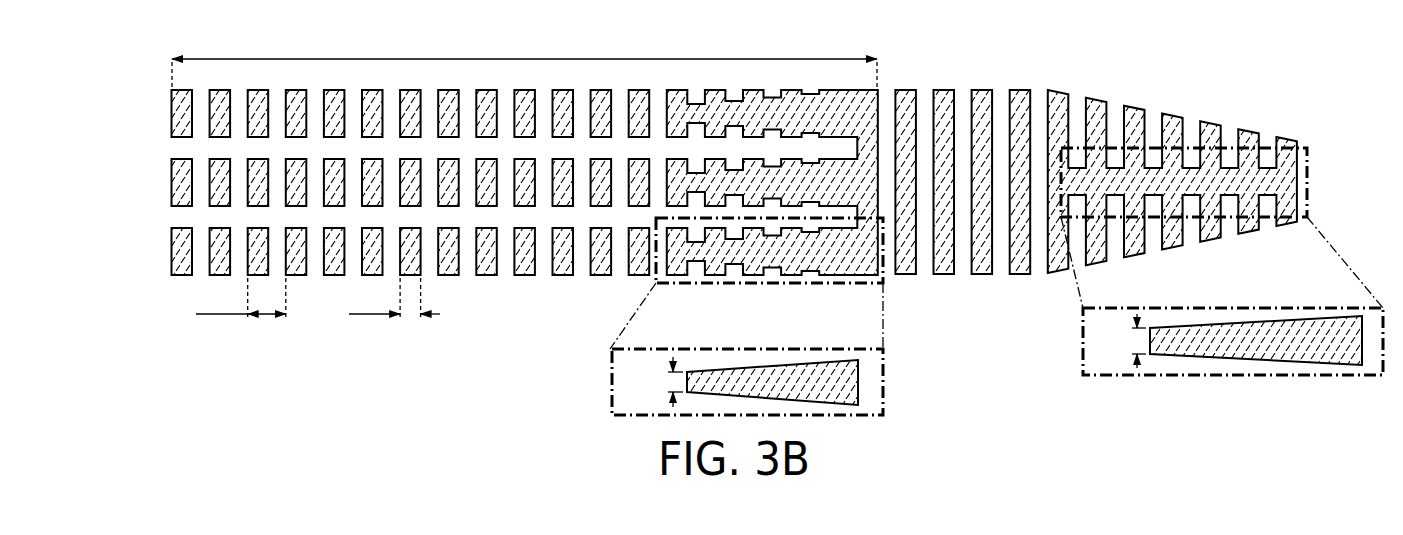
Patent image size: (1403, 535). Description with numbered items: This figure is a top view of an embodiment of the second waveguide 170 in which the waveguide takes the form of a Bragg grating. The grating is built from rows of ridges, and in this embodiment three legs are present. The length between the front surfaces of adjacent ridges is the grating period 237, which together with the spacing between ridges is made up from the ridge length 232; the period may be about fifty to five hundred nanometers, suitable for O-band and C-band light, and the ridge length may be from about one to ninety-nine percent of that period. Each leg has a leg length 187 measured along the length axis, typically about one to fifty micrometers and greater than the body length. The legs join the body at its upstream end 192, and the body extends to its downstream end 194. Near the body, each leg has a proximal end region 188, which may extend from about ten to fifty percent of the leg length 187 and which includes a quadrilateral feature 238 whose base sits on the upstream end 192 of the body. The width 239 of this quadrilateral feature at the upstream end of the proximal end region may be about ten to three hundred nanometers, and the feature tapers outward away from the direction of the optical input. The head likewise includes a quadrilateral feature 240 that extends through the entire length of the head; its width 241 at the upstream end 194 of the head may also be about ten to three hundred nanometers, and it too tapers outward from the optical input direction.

The second waveguide 170 is at (112, 34).
The leg length 187 is at (524, 58).
The proximal end region 188 is at (656, 283).
The upstream end 192 is at (897, 304).
The downstream end 194 is at (1310, 182).
The ridge length 232 is at (394, 298).
The grating period 237 is at (241, 298).
The quadrilateral feature 238 is at (772, 382).
The width of quadrilateral feature 239 is at (655, 382).
The quadrilateral feature 240 is at (1256, 340).
The width of quadrilateral feature 241 is at (1120, 341).